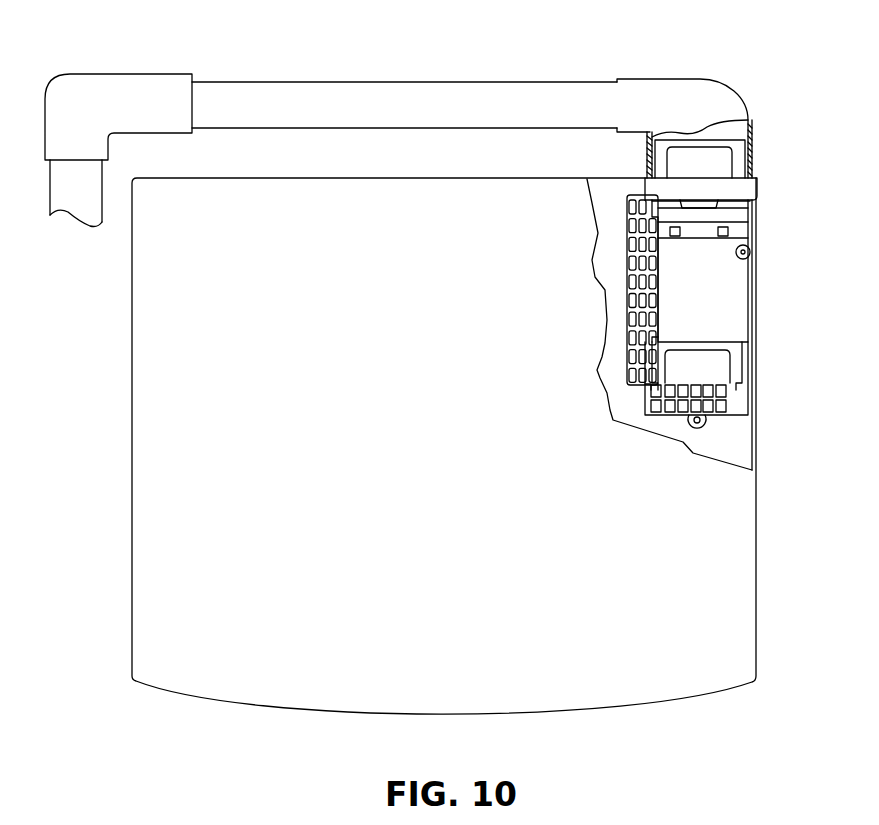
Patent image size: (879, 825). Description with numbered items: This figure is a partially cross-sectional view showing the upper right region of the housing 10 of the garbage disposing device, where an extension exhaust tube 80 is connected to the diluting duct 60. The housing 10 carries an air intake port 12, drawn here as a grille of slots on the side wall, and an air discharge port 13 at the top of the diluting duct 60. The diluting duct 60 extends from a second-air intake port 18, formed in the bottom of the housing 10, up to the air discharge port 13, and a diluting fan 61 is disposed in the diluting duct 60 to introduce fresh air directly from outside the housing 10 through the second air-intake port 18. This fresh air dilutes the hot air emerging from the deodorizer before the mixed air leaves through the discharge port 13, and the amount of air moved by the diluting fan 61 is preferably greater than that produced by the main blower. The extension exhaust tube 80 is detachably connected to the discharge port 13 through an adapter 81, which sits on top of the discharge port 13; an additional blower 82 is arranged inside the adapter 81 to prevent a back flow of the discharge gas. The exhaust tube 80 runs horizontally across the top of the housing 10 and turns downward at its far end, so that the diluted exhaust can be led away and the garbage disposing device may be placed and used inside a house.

The housing 10 is at (756, 447).
The air intake port 12 is at (630, 340).
The air discharge port 13 is at (720, 193).
The second-air intake port 18 is at (722, 402).
The diluting duct 60 is at (720, 288).
The diluting fan 61 is at (720, 365).
The extension exhaust tube 80 is at (535, 107).
The adapter 81 is at (755, 155).
The additional blower 82 is at (697, 163).